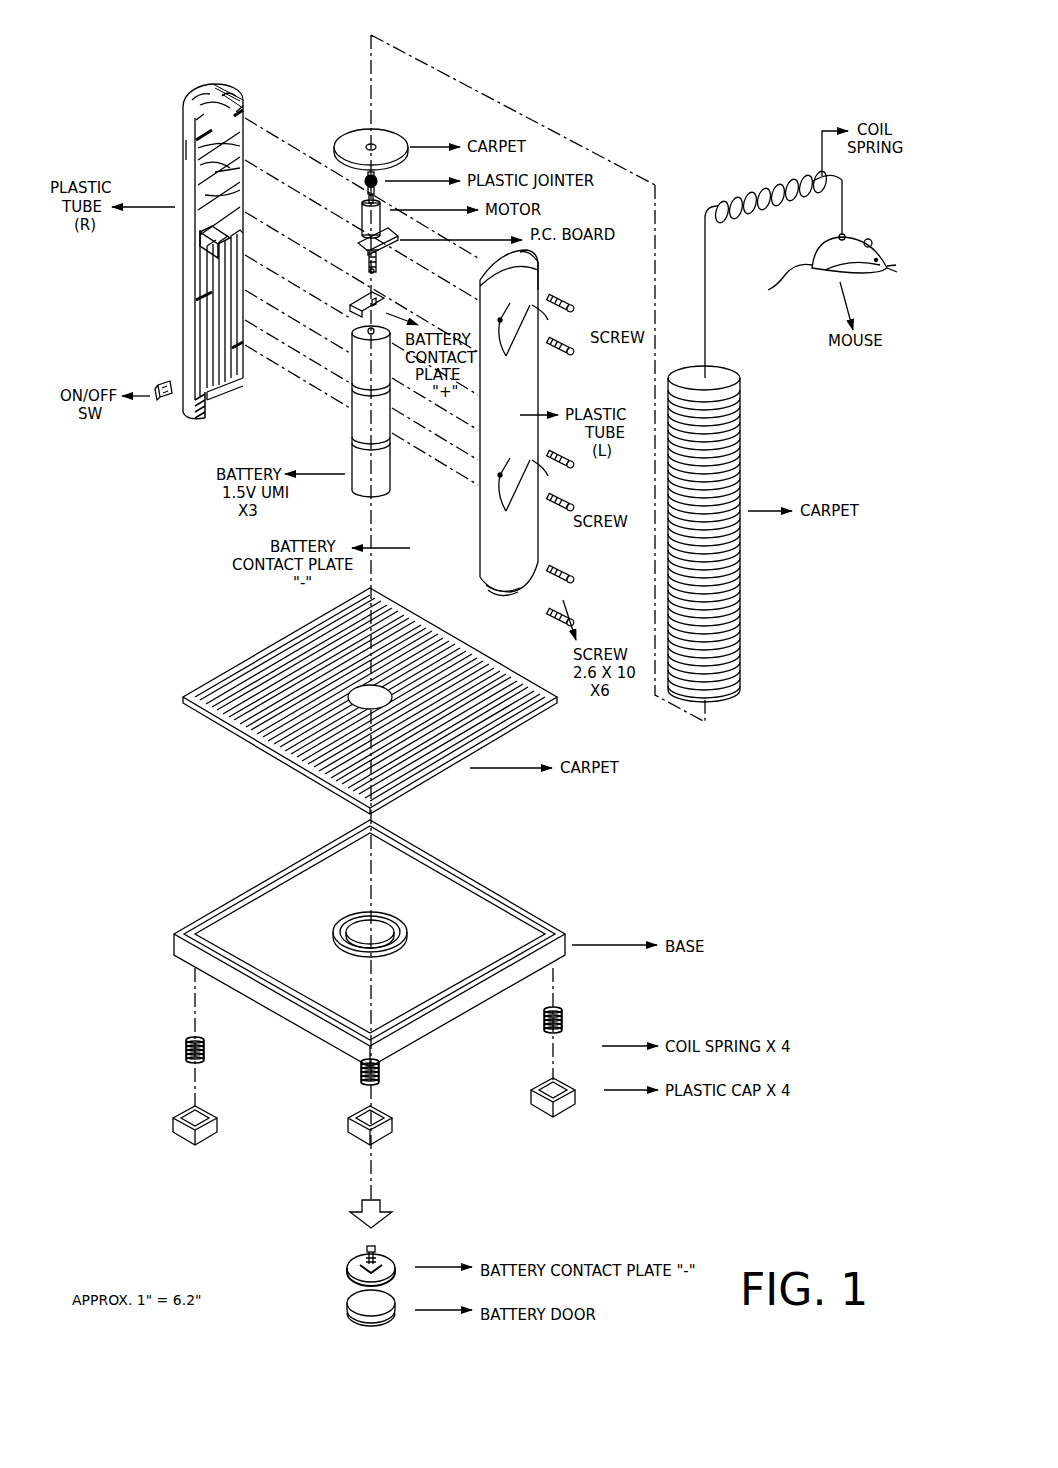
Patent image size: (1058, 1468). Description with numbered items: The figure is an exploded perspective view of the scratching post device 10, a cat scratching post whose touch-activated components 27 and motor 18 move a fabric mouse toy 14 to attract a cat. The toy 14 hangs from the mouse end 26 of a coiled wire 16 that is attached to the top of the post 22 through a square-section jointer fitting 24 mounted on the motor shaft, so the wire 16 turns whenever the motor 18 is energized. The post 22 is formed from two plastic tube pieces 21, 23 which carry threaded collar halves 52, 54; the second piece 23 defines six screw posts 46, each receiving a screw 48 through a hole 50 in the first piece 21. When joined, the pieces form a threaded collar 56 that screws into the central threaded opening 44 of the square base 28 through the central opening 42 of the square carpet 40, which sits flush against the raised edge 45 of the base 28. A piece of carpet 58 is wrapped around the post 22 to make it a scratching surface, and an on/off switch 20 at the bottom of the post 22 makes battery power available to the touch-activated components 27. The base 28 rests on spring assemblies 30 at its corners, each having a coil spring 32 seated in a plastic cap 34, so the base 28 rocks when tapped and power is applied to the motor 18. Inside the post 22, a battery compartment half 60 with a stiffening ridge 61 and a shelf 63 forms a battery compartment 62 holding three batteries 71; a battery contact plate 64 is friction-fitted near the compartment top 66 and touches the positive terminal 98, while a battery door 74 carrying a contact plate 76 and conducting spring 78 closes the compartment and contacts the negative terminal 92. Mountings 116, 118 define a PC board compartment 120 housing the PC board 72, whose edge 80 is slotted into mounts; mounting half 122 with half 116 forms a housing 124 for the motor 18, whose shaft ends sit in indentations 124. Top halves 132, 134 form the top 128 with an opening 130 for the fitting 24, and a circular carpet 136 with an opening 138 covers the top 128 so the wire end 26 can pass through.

The scratching post device 10 is at (180, 586).
The mouse toy 14 is at (818, 250).
The coiled wire 16 is at (768, 195).
The motor 18 is at (360, 220).
The on/off switch 20 is at (163, 383).
The plastic tube piece 21 is at (542, 282).
The post 22 is at (180, 279).
The plastic tube piece 23 is at (186, 148).
The jointer fitting 24 is at (365, 182).
The mouse end of wire 26 is at (845, 216).
The touch-activated components 27 is at (370, 270).
The base 28 is at (568, 945).
The spring assembly 30 is at (580, 1044).
The coil spring 32 is at (208, 1054).
The plastic cap 34 is at (183, 1132).
The square carpet 40 is at (207, 714).
The carpet central opening 42 is at (356, 690).
The central threaded opening 44 is at (398, 925).
The raised edge 45 is at (238, 904).
The screw post 46 is at (196, 138).
The screw 48 is at (576, 352).
The screw hole 50 is at (508, 560).
The threaded collar half 52 is at (500, 598).
The threaded collar half 54 is at (200, 414).
The threaded collar 56 is at (228, 400).
The post carpet 58 is at (742, 432).
The battery compartment half 60 is at (222, 270).
The stiffening ridge 61 is at (238, 192).
The battery compartment 62 is at (203, 240).
The shelf 63 is at (228, 248).
The battery contact plate 64 is at (378, 282).
The compartment top 66 is at (236, 228).
The batteries 71 is at (388, 466).
The PC board 72 is at (397, 240).
The battery door 74 is at (349, 1303).
The battery contact plate 76 is at (349, 1268).
The electrically conducting spring 78 is at (366, 1250).
The PC board edge 80 is at (360, 250).
The negative battery terminal 92 is at (360, 493).
The positive battery terminal 98 is at (350, 307).
The mounting half 116 is at (238, 140).
The mounting half 118 is at (236, 162).
The PC board compartment 120 is at (205, 178).
The mounting half 122 is at (243, 112).
The motor housing / indentations 124 is at (214, 104).
The top 128 is at (196, 118).
The top opening 130 is at (228, 96).
The top half 132 is at (200, 92).
The top half 134 is at (540, 268).
The circular carpet 136 is at (385, 132).
The carpet opening 138 is at (367, 144).